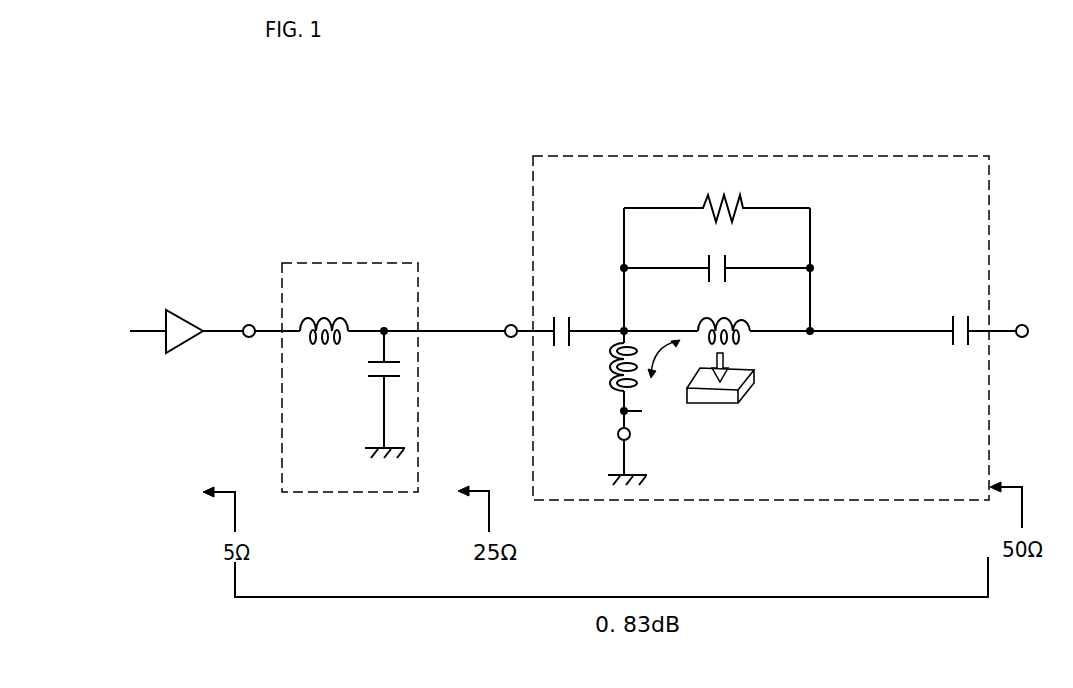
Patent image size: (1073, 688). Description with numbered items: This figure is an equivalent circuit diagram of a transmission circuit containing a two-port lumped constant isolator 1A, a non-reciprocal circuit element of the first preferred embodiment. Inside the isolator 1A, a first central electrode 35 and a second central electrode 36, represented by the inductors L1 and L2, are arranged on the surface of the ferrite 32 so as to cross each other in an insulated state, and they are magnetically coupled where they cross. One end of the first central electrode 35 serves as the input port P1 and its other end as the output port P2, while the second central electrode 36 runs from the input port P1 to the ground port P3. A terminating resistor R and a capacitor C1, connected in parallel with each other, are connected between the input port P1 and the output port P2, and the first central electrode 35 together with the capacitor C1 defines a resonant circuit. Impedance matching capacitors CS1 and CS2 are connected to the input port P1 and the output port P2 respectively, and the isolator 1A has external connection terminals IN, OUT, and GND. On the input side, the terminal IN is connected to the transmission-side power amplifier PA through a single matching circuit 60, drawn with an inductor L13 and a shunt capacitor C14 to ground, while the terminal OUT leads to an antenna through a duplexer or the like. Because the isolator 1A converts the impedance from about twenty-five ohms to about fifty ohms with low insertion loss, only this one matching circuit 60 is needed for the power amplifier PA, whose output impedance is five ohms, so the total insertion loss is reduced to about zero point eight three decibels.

The two-port lumped constant isolator 1A is at (761, 305).
The matching circuit 60 is at (350, 356).
The ferrite 32 is at (717, 400).
The first central electrode 35 is at (700, 317).
The second central electrode 36 is at (607, 385).
The transmission-side power amplifier PA is at (182, 309).
The inductor L13 is at (324, 317).
The capacitor C14 is at (362, 394).
The impedance matching capacitor CS1 is at (557, 314).
The impedance matching capacitor CS2 is at (962, 312).
The inductor L1 is at (680, 310).
The inductor L2 is at (615, 390).
The terminating resistor R is at (717, 194).
The capacitor C1 is at (717, 253).
The input port P1 is at (623, 328).
The output port P2 is at (812, 328).
The ground port P3 is at (646, 409).
The input-side external connection terminal IN is at (511, 305).
The output-side external connection terminal OUT is at (1023, 300).
The ground external connection terminal GND is at (643, 456).